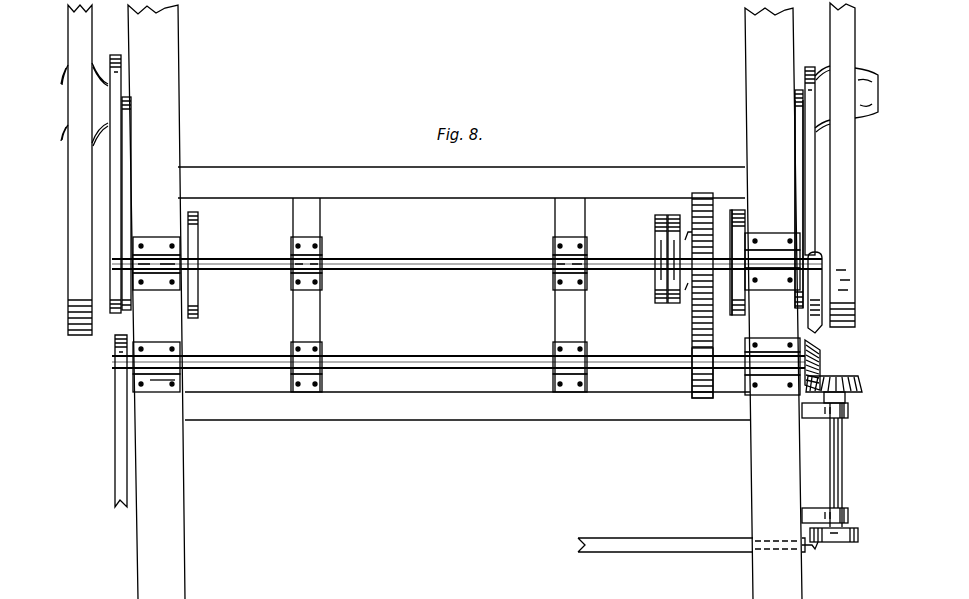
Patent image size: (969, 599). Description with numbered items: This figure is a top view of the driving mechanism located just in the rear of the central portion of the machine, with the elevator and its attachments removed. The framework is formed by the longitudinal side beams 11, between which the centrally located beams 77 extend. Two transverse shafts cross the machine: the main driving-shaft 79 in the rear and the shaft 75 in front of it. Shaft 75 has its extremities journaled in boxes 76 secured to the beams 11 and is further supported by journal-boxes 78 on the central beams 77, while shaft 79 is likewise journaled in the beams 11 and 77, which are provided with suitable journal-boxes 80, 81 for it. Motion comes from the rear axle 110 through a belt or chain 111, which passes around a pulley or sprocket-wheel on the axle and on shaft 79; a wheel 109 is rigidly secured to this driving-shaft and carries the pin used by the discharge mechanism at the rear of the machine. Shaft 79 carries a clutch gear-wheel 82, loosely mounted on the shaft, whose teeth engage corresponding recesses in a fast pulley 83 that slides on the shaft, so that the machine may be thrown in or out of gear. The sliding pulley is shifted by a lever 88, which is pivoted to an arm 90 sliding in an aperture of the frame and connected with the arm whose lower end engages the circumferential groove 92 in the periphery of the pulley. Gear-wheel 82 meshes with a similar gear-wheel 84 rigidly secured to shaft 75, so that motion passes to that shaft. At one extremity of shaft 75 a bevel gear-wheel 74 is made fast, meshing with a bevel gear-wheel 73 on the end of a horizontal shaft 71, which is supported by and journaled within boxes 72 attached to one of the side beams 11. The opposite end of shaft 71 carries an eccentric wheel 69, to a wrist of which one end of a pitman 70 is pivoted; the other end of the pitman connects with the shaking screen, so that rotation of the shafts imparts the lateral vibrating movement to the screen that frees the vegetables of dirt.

The longitudinal side beam 11 is at (469, 301).
The eccentric wheel 69 is at (852, 530).
The pitman 70 is at (672, 538).
The horizontal shaft 71 is at (843, 466).
The box 72 is at (814, 419).
The bevel gear-wheel 73 is at (842, 380).
The bevel gear-wheel 74 is at (822, 356).
The transverse shaft 75 is at (647, 362).
The journal-box 76 is at (178, 388).
The central beam 77 is at (321, 324).
The journal-box 78 is at (188, 360).
The transverse shaft 79 is at (240, 258).
The bearing 80 is at (156, 240).
The bearing 81 is at (323, 252).
The clutch gear-wheel 82 is at (703, 192).
The fast pulley 83 is at (657, 286).
The gear-wheel 84 is at (714, 360).
The lever 88 is at (823, 301).
The arm 90 is at (720, 258).
The circumferential groove 92 is at (665, 223).
The wheel 109 is at (745, 294).
The rear axle 110 is at (134, 102).
The belt or chain 111 is at (812, 174).